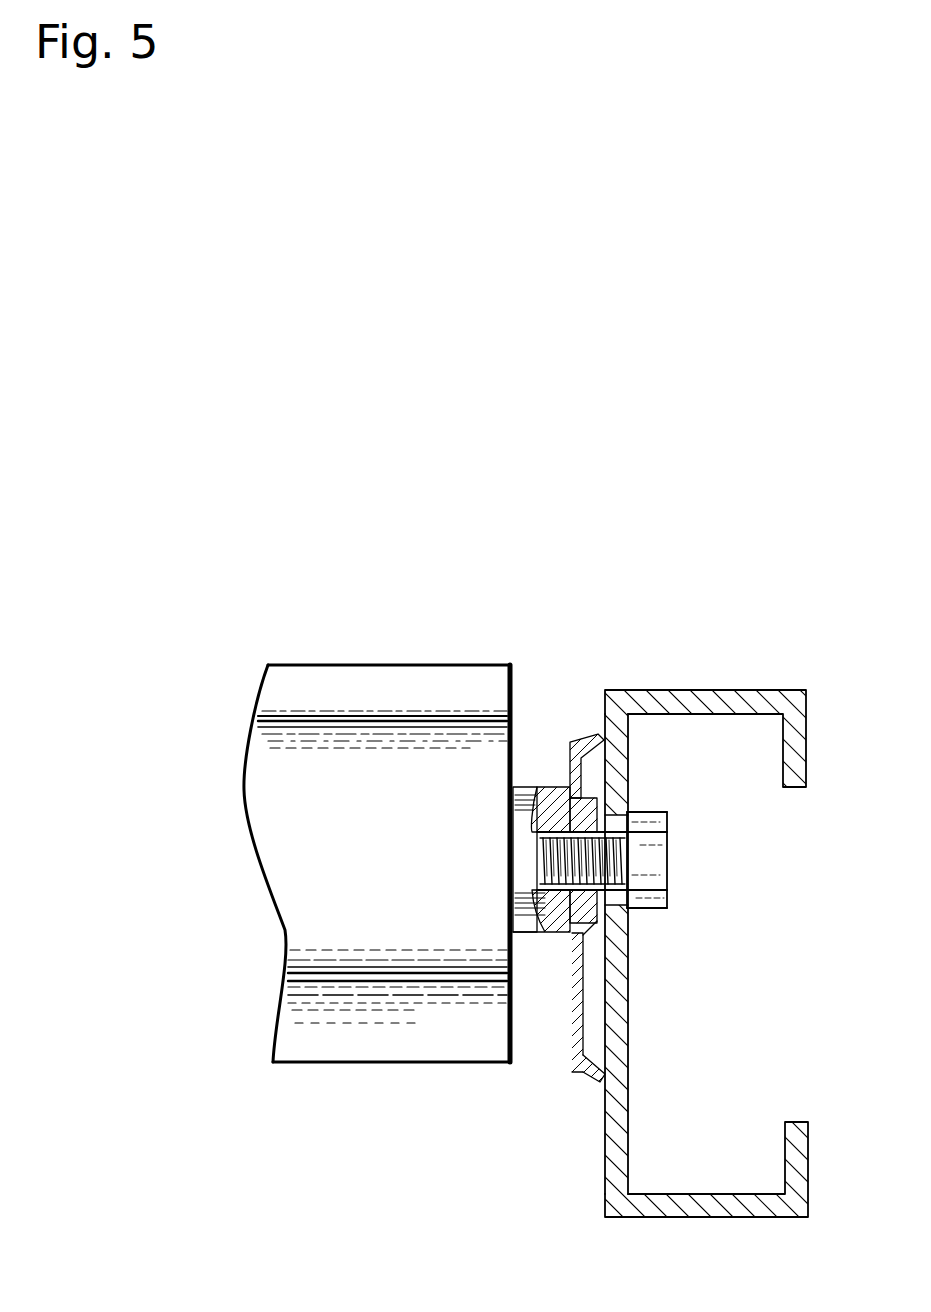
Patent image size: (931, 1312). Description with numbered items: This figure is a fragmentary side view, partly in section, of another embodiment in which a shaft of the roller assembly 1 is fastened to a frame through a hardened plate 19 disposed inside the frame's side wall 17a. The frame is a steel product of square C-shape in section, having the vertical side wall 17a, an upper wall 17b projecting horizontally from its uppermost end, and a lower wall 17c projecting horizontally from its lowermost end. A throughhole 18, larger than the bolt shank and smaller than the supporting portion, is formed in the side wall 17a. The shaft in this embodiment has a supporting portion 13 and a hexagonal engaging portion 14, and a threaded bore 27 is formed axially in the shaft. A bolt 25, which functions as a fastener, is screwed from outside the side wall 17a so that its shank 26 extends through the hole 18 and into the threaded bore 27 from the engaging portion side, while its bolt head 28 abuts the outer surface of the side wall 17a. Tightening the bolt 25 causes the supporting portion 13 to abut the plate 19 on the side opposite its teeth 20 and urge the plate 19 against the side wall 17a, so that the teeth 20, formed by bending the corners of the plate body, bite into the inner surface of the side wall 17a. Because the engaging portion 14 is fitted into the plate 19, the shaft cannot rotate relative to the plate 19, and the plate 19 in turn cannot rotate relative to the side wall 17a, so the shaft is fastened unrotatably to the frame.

The main body unit 1 is at (418, 653).
The supporting portion 13 is at (524, 790).
The engaging portion 14 is at (598, 921).
The side wall 17a is at (606, 1178).
The upper wall 17b is at (780, 702).
The lower wall 17c is at (753, 1208).
The throughhole 18 is at (630, 895).
The plate 19 is at (572, 1045).
The teeth 20 is at (586, 742).
The bolt 25 is at (668, 840).
The shank 26 is at (637, 818).
The threaded bore 27 is at (556, 933).
The bolt head 28 is at (656, 866).